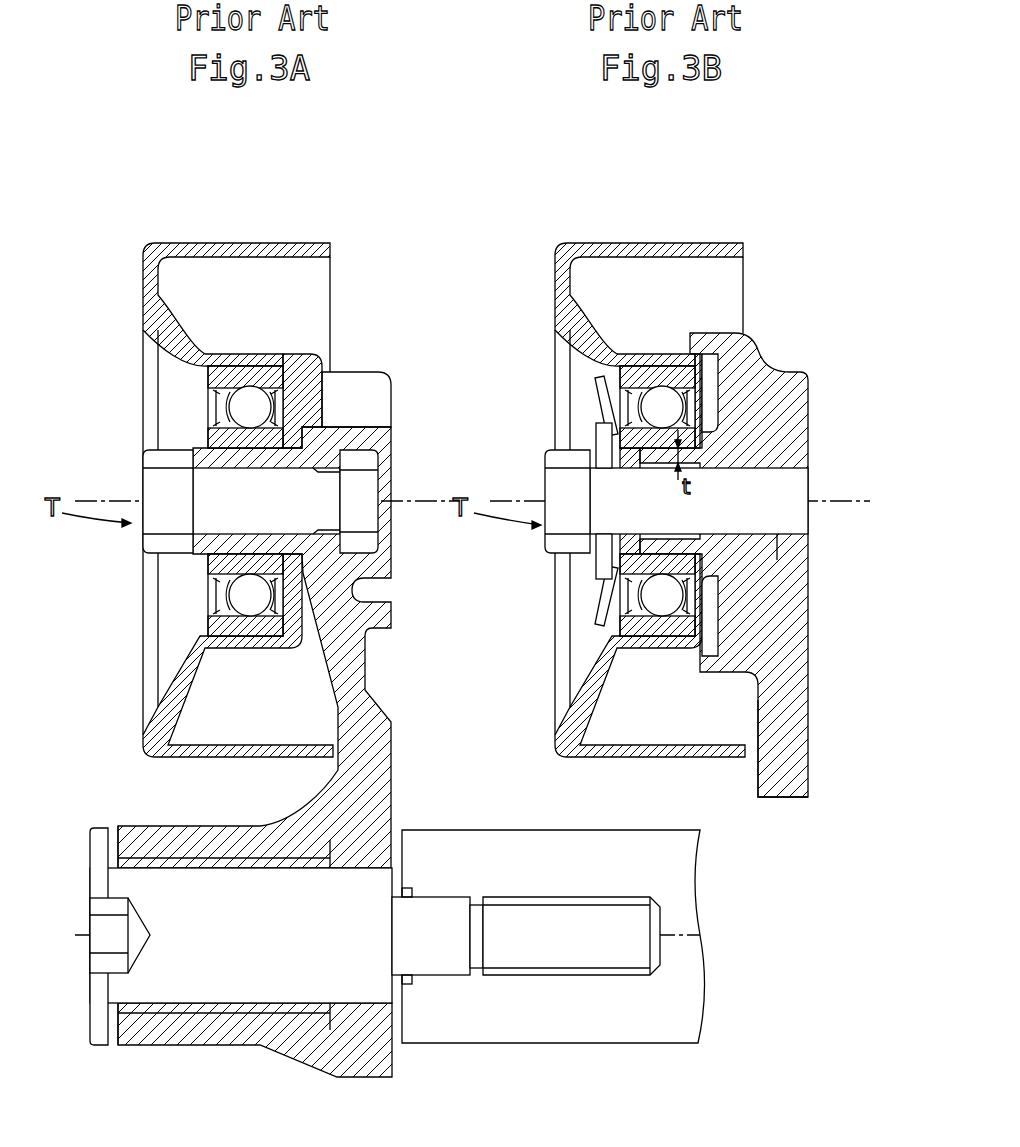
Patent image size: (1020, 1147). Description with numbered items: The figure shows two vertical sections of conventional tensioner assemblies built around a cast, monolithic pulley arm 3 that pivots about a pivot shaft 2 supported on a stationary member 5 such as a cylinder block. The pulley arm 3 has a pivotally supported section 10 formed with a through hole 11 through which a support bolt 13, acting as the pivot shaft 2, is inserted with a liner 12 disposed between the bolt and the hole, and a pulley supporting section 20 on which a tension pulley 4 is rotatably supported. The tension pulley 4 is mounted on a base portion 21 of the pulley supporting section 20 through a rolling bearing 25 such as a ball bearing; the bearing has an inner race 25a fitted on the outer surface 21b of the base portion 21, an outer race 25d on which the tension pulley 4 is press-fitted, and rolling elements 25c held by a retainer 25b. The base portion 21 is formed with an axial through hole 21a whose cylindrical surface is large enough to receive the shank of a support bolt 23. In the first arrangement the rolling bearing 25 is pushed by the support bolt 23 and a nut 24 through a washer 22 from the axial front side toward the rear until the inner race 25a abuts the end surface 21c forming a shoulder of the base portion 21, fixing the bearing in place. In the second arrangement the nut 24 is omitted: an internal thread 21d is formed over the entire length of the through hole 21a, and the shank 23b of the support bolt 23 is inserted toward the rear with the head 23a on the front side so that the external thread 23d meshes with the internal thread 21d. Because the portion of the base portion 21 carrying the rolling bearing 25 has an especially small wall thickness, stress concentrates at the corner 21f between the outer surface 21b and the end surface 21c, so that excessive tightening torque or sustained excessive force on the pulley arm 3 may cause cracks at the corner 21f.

In FIG. 3A, the pivot shaft 2 is at (300, 987).
In FIG. 3A, the pulley arm 3 is at (383, 785).
In FIG. 3B, the pulley arm 3 is at (792, 735).
In FIG. 3A, the tension pulley 4 is at (260, 250).
In FIG. 3B, the tension pulley 4 is at (672, 250).
In FIG. 3A, the stationary member 5 is at (529, 855).
In FIG. 3A, the pivotally supported section 10 is at (90, 936).
In FIG. 3A, the through hole 11 is at (172, 858).
In FIG. 3A, the liner 12 is at (273, 1008).
In FIG. 3A, the support bolt 13 is at (125, 990).
In FIG. 3A, the pulley supporting section 20 is at (400, 457).
In FIG. 3B, the pulley supporting section 20 is at (812, 457).
In FIG. 3A, the base portion 21 is at (182, 542).
In FIG. 3B, the base portion 21 is at (597, 542).
In FIG. 3A, the through hole 21a is at (232, 479).
In FIG. 3B, the through hole 21a is at (613, 477).
In FIG. 3A, the outer surface 21b is at (225, 606).
In FIG. 3B, the outer surface 21b is at (630, 607).
In FIG. 3A, the end surface 21c is at (256, 592).
In FIG. 3B, the end surface 21c is at (660, 590).
In FIG. 3B, the internal thread 21d is at (780, 470).
In FIG. 3B, the corner 21f is at (720, 570).
In FIG. 3A, the washer 22 is at (212, 588).
In FIG. 3B, the washer 22 is at (613, 596).
In FIG. 3A, the support bolt 23 is at (374, 520).
In FIG. 3B, the support bolt 23 is at (680, 522).
In FIG. 3B, the head 23a is at (558, 528).
In FIG. 3B, the shank 23b is at (752, 513).
In FIG. 3B, the external thread 23d is at (700, 553).
In FIG. 3A, the nut 24 is at (152, 481).
In FIG. 3A, the rolling bearing 25 is at (160, 395).
In FIG. 3B, the rolling bearing 25 is at (594, 383).
In FIG. 3A, the inner race 25a is at (326, 418).
In FIG. 3B, the inner race 25a is at (770, 400).
In FIG. 3A, the retainer 25b is at (205, 367).
In FIG. 3B, the retainer 25b is at (615, 367).
In FIG. 3A, the rolling elements 25c is at (238, 403).
In FIG. 3B, the rolling elements 25c is at (650, 403).
In FIG. 3A, the outer race 25d is at (255, 375).
In FIG. 3B, the outer race 25d is at (666, 373).